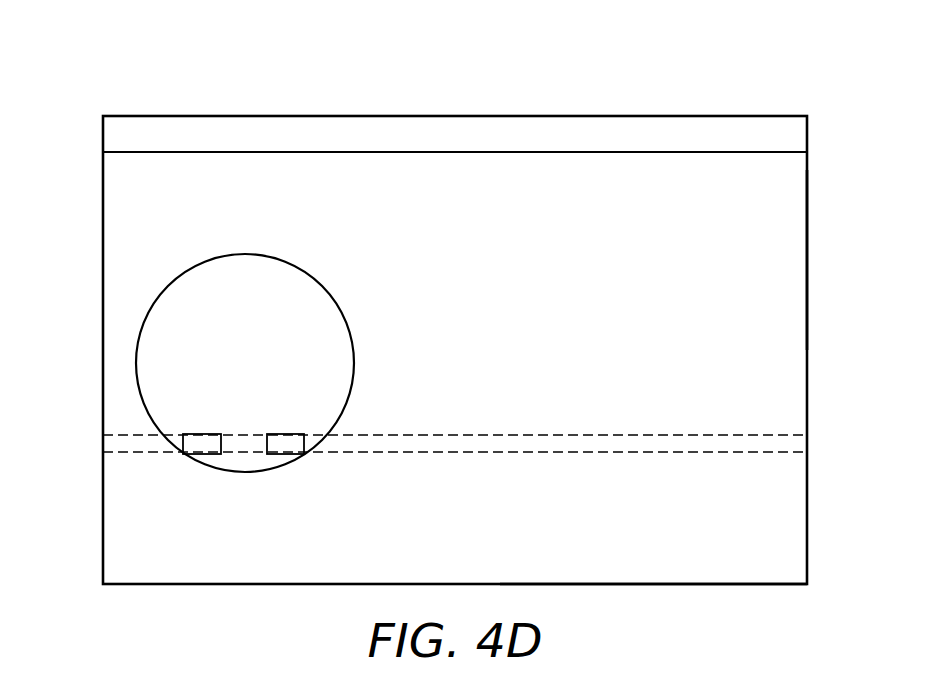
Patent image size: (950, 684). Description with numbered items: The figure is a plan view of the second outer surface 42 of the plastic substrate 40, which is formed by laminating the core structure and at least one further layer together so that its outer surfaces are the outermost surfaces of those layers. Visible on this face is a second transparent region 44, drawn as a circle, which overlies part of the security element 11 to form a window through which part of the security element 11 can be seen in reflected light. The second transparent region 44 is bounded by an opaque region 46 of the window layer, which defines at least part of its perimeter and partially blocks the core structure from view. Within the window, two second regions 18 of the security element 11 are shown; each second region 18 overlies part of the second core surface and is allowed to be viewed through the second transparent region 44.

The plastic substrate 40 is at (757, 92).
The second outer surface 42 is at (792, 261).
The second transparent region 44 is at (148, 365).
The opaque region 46 is at (697, 562).
The security element 11 is at (283, 432).
The second region 18 is at (200, 455).